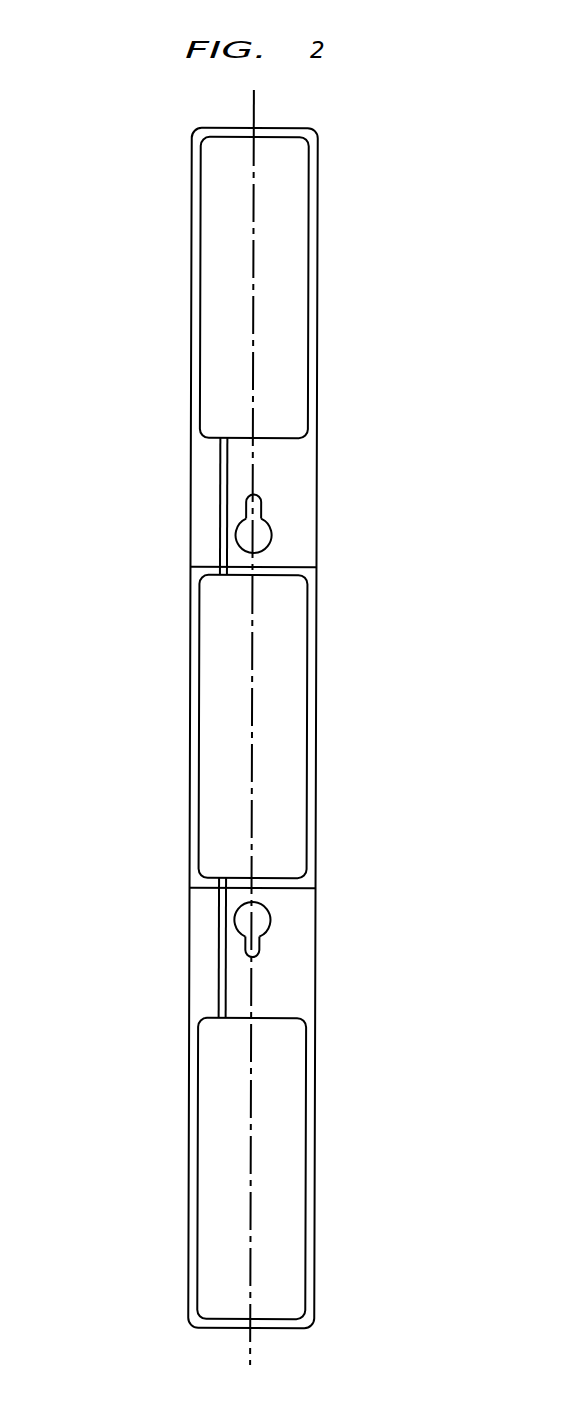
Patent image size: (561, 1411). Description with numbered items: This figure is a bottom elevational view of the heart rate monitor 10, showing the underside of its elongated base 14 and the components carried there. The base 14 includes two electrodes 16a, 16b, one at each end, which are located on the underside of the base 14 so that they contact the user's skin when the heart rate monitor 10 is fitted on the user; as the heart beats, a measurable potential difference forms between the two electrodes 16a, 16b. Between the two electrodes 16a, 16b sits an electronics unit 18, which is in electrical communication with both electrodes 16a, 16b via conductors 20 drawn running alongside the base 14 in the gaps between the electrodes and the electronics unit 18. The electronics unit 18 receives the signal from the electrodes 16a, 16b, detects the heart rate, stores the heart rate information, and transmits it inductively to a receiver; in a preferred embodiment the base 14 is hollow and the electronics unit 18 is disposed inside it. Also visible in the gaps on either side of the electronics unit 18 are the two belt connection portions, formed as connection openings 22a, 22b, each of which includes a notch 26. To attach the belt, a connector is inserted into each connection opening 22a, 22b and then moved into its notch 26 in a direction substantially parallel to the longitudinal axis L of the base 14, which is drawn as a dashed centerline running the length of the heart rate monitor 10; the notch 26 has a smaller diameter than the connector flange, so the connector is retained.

The heart rate monitor 10 is at (106, 264).
The longitudinal axis L is at (252, 727).
The base 14 is at (253, 728).
The electrode 16a is at (254, 287).
The electrode 16b is at (251, 1168).
The electronics unit 18 is at (253, 726).
The conductors 20 is at (223, 728).
The connection opening 22a is at (254, 536).
The connection opening 22b is at (252, 919).
The notch 26 is at (253, 725).